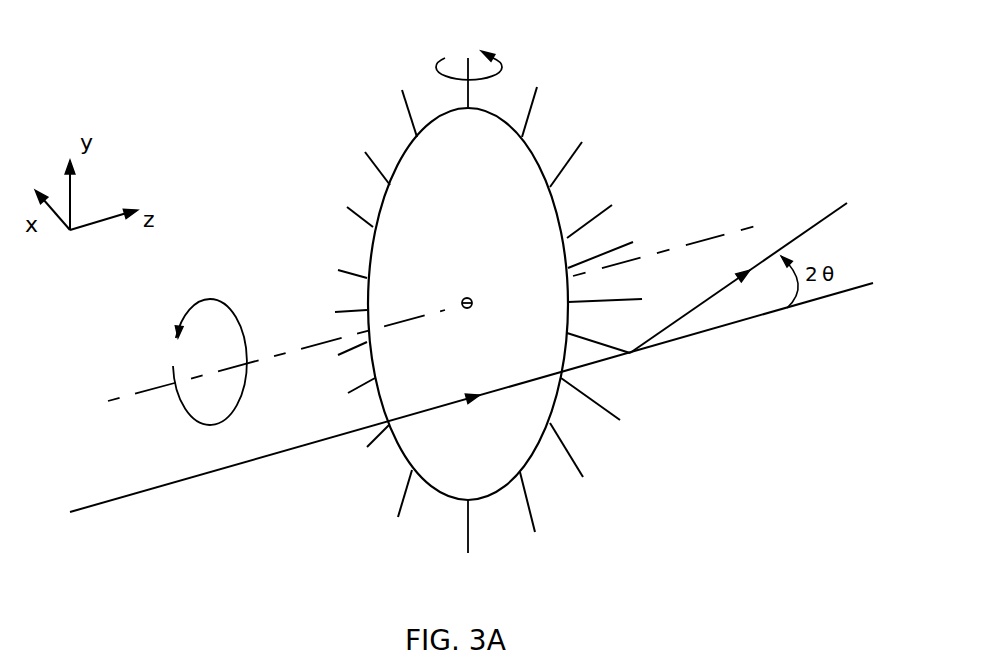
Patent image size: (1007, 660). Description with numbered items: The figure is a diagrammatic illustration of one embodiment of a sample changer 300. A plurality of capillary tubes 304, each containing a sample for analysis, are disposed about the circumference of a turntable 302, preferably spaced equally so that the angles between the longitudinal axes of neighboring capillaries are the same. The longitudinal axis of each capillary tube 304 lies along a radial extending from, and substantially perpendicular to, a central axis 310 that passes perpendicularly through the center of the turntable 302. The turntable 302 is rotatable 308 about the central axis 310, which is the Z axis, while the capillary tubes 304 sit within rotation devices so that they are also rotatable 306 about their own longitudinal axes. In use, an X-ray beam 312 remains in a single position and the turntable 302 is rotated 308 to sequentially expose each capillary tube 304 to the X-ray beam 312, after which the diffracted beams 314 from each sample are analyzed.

The sample changer 300 is at (260, 90).
The turntable 302 is at (490, 215).
The capillary tubes 304 is at (583, 468).
The rotation of capillary tubes about their longitudinal axes 306 is at (438, 64).
The rotation of turntable 308 is at (223, 300).
The central axis 310 is at (694, 247).
The X-ray beam 312 is at (150, 489).
The diffracted beams 314 is at (830, 216).